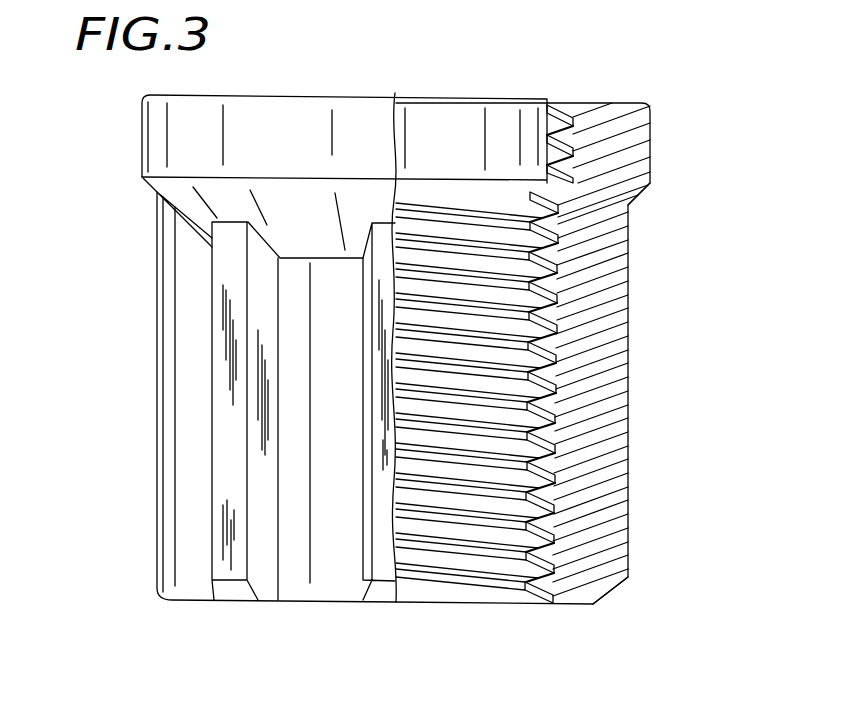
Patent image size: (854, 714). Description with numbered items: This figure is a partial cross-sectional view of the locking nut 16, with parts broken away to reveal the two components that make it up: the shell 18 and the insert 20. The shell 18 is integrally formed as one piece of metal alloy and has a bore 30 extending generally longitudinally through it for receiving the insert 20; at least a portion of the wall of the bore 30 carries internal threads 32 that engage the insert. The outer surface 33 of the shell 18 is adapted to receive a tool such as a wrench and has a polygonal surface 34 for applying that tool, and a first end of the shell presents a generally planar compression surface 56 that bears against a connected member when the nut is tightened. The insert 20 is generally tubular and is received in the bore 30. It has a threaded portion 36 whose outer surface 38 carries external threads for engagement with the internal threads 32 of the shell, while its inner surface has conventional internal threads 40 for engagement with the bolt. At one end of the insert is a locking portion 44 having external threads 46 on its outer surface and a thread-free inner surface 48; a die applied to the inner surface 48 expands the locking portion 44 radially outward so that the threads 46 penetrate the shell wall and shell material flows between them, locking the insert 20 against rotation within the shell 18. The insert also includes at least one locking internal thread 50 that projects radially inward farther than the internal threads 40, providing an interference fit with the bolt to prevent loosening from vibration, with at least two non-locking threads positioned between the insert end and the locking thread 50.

The locking nut 16 is at (634, 429).
The shell 18 is at (612, 113).
The insert 20 is at (545, 538).
The bore 30 is at (545, 542).
The internal threads 32 is at (575, 312).
The outer surface 33 is at (320, 567).
The polygonal surface 34 is at (230, 259).
The threaded portion 36 is at (545, 463).
The outer surface 38 is at (598, 596).
The internal threads 40 is at (527, 233).
The locking portion 44 is at (567, 98).
The threads 46 is at (605, 152).
The inner surface 48 is at (537, 143).
The locking internal thread 50 is at (575, 405).
The compression surface 56 is at (283, 96).